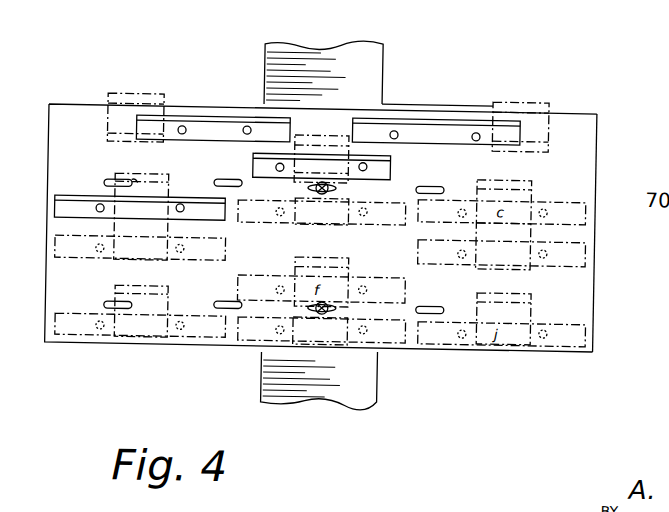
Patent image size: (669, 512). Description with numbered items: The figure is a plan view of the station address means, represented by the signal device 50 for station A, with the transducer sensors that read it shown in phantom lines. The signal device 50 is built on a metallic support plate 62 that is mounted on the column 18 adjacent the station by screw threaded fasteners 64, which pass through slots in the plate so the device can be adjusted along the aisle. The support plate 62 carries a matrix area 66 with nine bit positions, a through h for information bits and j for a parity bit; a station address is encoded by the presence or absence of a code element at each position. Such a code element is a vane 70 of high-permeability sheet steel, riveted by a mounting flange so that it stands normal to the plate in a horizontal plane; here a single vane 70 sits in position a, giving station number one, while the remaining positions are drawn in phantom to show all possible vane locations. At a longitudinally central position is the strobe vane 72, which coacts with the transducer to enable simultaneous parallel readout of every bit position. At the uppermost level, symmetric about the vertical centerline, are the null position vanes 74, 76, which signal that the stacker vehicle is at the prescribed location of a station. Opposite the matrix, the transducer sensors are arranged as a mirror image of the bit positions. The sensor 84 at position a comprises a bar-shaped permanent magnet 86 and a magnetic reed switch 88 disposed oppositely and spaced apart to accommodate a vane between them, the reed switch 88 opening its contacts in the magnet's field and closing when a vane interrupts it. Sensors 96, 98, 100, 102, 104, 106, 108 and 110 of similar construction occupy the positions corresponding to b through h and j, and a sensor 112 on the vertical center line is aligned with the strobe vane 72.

The column 18 is at (285, 36).
The screw threaded fastener 64 is at (329, 295).
The support plate 62 is at (592, 113).
The matrix area 66 is at (603, 178).
The signal device 50 is at (428, 96).
The null position vane 74 is at (220, 113).
The null position vane 76 is at (450, 110).
The strobe vane 72 is at (384, 164).
The sensor 112 is at (337, 130).
The sensor 84 is at (109, 167).
The magnetic reed switch 88 is at (141, 177).
The vane 70 is at (197, 192).
The sensor 100 is at (175, 225).
The permanent magnet 86 is at (137, 218).
The sensor 96 is at (347, 202).
The sensor 104 is at (341, 259).
The sensor 98 is at (536, 179).
The sensor 102 is at (538, 225).
The sensor 110 is at (534, 307).
The sensor 106 is at (124, 315).
The sensor 108 is at (357, 345).